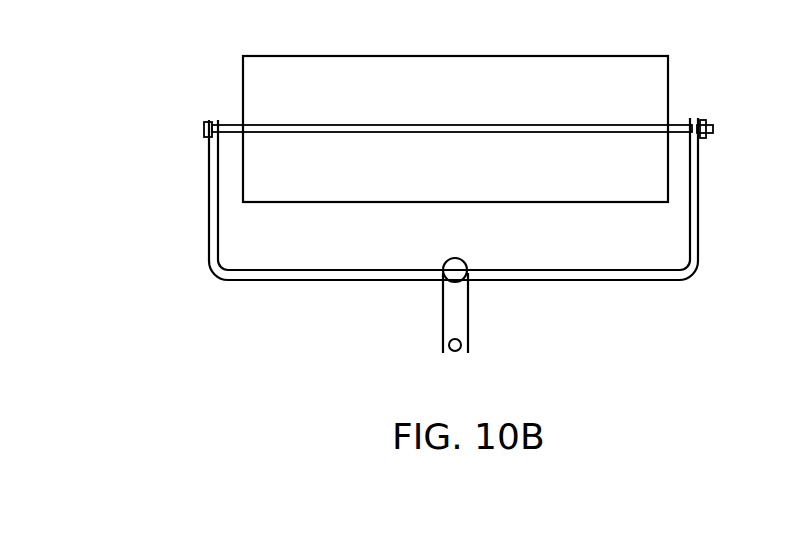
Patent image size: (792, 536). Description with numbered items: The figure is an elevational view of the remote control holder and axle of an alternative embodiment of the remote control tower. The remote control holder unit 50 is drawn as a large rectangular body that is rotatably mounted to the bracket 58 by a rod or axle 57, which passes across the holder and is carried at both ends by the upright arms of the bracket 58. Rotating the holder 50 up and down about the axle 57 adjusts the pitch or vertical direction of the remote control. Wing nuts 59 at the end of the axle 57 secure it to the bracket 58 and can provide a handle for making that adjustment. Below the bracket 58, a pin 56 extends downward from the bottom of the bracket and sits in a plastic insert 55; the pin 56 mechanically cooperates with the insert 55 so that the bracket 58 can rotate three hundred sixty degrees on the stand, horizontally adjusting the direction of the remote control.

The remote control holder unit 50 is at (649, 56).
The plastic insert 55 is at (443, 345).
The pin 56 is at (468, 302).
The rod or axle 57 is at (233, 122).
The bracket 58 is at (698, 240).
The wing nuts 59 is at (712, 132).